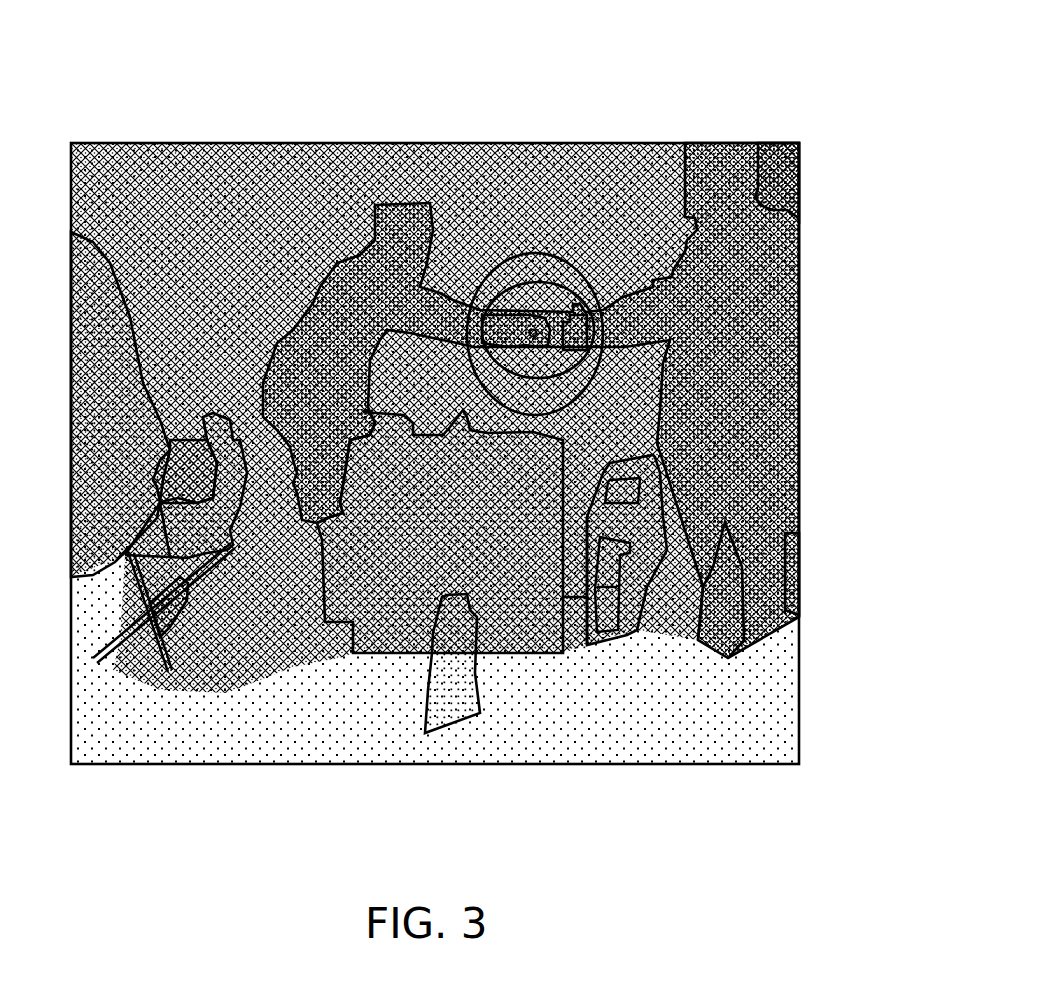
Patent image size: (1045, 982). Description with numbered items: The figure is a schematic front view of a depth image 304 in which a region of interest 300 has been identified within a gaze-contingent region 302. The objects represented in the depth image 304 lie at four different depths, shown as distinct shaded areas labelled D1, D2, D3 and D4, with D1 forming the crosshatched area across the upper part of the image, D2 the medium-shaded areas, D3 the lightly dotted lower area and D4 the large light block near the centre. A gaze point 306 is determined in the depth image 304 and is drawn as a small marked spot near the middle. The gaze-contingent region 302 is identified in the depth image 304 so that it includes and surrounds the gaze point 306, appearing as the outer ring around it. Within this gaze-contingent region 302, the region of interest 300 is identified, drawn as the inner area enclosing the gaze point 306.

The first depth D1 is at (227, 160).
The second depth D2 is at (392, 230).
The third depth D3 is at (622, 745).
The fourth depth D4 is at (377, 640).
The region of interest 300 is at (570, 303).
The gaze-contingent region 302 is at (508, 268).
The depth image 304 is at (729, 93).
The gaze point 306 is at (533, 330).